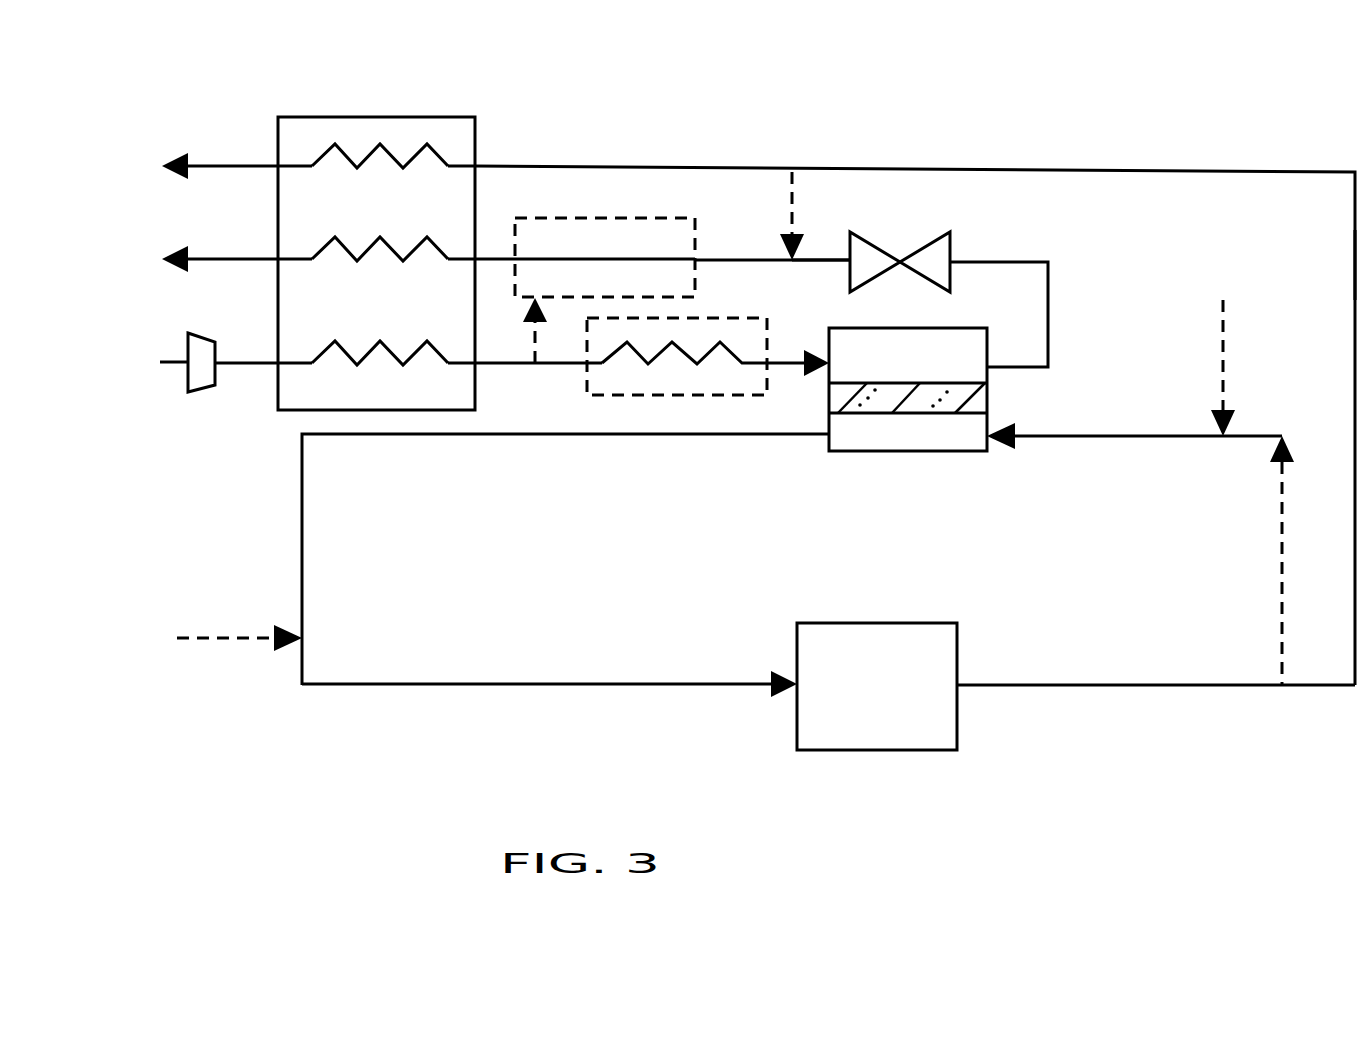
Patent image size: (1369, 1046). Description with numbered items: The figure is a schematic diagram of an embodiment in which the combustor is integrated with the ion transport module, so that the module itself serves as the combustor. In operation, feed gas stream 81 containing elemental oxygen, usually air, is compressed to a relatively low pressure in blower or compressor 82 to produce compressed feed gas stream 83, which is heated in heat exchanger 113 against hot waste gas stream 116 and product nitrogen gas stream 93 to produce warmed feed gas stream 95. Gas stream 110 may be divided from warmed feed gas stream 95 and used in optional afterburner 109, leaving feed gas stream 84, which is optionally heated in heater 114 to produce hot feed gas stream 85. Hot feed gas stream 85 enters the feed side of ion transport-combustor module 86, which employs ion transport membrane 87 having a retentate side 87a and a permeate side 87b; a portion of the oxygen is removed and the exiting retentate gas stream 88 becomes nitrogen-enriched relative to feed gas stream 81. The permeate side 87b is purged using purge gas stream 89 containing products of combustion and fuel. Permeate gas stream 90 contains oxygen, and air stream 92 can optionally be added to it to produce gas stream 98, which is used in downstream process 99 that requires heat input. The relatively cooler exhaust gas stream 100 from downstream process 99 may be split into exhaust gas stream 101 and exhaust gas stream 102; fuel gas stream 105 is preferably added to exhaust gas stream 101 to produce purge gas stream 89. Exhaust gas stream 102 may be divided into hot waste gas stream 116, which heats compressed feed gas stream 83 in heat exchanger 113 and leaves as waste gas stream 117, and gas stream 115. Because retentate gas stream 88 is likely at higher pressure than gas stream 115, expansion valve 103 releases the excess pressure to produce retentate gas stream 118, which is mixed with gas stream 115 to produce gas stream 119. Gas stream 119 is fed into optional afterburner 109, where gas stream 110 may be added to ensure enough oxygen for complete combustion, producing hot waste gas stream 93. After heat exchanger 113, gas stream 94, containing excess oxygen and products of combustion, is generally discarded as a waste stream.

The feed gas stream 81 is at (175, 362).
The blower or compressor 82 is at (210, 340).
The compressed feed gas stream 83 is at (245, 368).
The feed gas stream 84 is at (570, 365).
The hot feed gas stream 85 is at (786, 360).
The ion transport-combustor module 86 is at (935, 328).
The ion transport membrane 87 is at (990, 398).
The retentate side 87a is at (878, 383).
The permeate side 87b is at (945, 414).
The retentate gas stream 88 is at (1016, 362).
The purge gas stream 89 is at (1165, 445).
The permeate gas stream 90 is at (305, 555).
The air stream 92 is at (236, 642).
The hot waste gas stream 93 is at (496, 258).
The gas stream 94 is at (252, 258).
The warmed feed gas stream 95 is at (520, 340).
The gas stream 98 is at (608, 680).
The downstream process 99 is at (920, 623).
The exhaust gas stream 100 is at (1138, 683).
The exhaust gas stream 101 is at (1278, 548).
The exhaust gas stream 102 is at (1355, 228).
The expansion valve 103 is at (952, 245).
The fuel gas stream 105 is at (1228, 330).
The afterburner 109 is at (560, 215).
The gas stream 110 is at (552, 365).
The heat exchanger 113 is at (405, 410).
The heater 114 is at (700, 316).
The gas stream 115 is at (800, 205).
The hot waste gas stream 116 is at (697, 135).
The waste gas stream 117 is at (248, 162).
The retentate gas stream 118 is at (826, 258).
The gas stream 119 is at (735, 258).